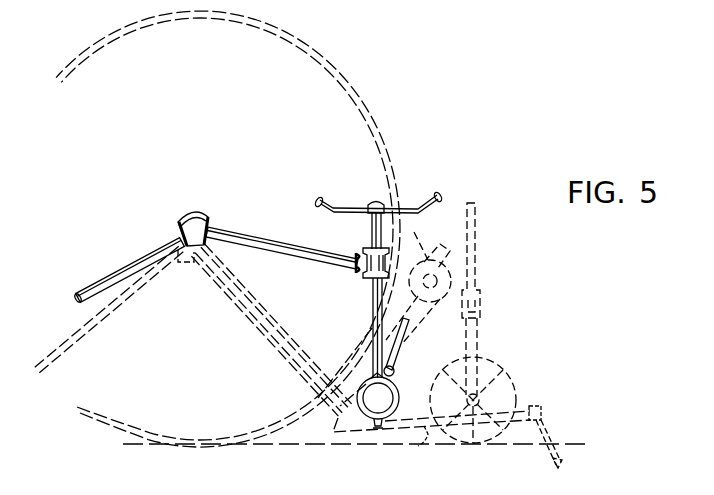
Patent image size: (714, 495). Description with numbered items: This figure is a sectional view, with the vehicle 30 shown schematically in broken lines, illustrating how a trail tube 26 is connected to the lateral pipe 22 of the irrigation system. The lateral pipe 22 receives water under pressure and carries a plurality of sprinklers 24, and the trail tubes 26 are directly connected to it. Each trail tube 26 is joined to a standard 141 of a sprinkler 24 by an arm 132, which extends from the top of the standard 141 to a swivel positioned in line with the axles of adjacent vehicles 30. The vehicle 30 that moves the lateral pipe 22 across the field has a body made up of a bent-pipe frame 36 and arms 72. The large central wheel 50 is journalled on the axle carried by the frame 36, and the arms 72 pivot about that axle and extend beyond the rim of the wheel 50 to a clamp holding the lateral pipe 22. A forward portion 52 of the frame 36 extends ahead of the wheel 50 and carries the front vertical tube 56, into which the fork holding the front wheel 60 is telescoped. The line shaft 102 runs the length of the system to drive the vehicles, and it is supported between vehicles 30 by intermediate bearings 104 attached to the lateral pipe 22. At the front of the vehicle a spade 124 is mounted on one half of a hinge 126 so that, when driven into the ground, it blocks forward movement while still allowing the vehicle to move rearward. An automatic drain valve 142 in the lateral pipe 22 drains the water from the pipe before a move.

The lateral pipe 22 is at (398, 388).
The sprinkler 24 is at (342, 185).
The trail tube 26 is at (128, 262).
The vehicle 30 is at (349, 70).
The frame 36 is at (222, 288).
The large central wheel 50 is at (267, 38).
The forward portion of the frame 52 is at (417, 448).
The front vertical tube 56 is at (482, 308).
The front wheel 60 is at (502, 362).
The arm 72 is at (258, 296).
The line shaft 102 is at (398, 360).
The intermediate bearing 104 is at (396, 371).
The spade 124 is at (546, 425).
The hinge 126 is at (538, 404).
The arm 132 is at (234, 232).
The standard 141 is at (372, 300).
The automatic drain valve 142 is at (378, 428).